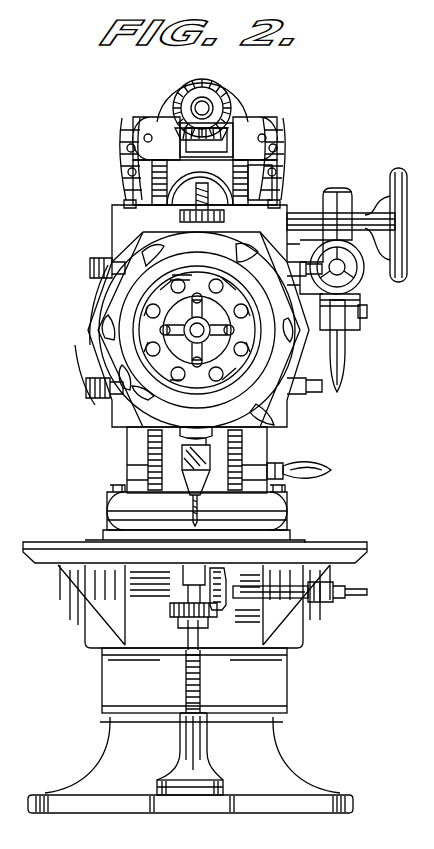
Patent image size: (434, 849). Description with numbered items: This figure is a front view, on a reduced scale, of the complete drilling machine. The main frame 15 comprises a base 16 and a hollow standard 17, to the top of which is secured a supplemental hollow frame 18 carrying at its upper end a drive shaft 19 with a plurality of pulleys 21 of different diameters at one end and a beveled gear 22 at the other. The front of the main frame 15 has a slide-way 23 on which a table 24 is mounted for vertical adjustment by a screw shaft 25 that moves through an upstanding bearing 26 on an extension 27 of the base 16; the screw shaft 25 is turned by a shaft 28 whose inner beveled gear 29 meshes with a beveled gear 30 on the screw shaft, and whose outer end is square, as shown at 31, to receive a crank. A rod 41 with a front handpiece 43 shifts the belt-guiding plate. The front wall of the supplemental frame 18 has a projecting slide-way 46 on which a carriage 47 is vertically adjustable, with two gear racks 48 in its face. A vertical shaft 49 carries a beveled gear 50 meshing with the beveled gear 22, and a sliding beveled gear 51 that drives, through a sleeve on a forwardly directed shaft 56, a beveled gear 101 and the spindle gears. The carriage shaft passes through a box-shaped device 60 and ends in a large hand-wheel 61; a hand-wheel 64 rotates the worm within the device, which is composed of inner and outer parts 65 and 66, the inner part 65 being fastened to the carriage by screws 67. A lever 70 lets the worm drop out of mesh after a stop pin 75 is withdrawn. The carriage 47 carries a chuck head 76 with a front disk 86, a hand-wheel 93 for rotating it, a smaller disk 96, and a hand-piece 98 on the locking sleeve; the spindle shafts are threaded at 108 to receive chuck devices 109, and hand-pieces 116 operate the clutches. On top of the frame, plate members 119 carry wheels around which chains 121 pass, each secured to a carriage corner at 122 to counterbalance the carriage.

The main frame 15 is at (191, 514).
The base 16 is at (350, 797).
The hollow standard 17 is at (275, 742).
The supplemental hollow frame 18 is at (127, 441).
The drive shaft 19 is at (198, 102).
The pulleys 21 is at (232, 82).
The beveled gear 22 is at (206, 100).
The slide-way 23 is at (102, 692).
The table 24 is at (45, 545).
The screw shaft 25 is at (186, 684).
The upstanding bearing 26 is at (208, 752).
The extension 27 is at (188, 806).
The shaft 28 is at (290, 604).
The beveled gear 29 is at (222, 604).
The beveled gear 30 is at (180, 611).
The square end 31 is at (360, 597).
The rod 41 is at (284, 466).
The handpiece 43 is at (331, 470).
The slide-way 46 is at (266, 171).
The carriage 47 is at (130, 182).
The gear racks 48 is at (168, 180).
The vertical shaft 49 is at (210, 195).
The beveled gear 50 is at (228, 100).
The beveled gear 51 is at (260, 182).
The forwardly directed shaft 56 is at (198, 336).
The box-shaped device 60 is at (336, 188).
The hand-wheel 61 is at (399, 168).
The hand-wheel 64 is at (366, 272).
The inner part 65 is at (322, 330).
The outer part 66 is at (360, 322).
The screws 67 is at (300, 213).
The lever 70 is at (346, 358).
The stop pin 75 is at (367, 312).
The chuck head 76 is at (150, 238).
The disk 86 is at (168, 290).
The hand-wheel 93 is at (106, 392).
The smaller disk 96 is at (233, 350).
The hand-piece 98 is at (127, 393).
The beveled gear 101 is at (106, 277).
The threaded ends 108 is at (78, 350).
The chuck devices 109 is at (148, 459).
The hand-pieces 116 is at (274, 418).
The plate members 119 is at (160, 125).
The chains 121 is at (130, 120).
The chain attachment 122 is at (122, 204).